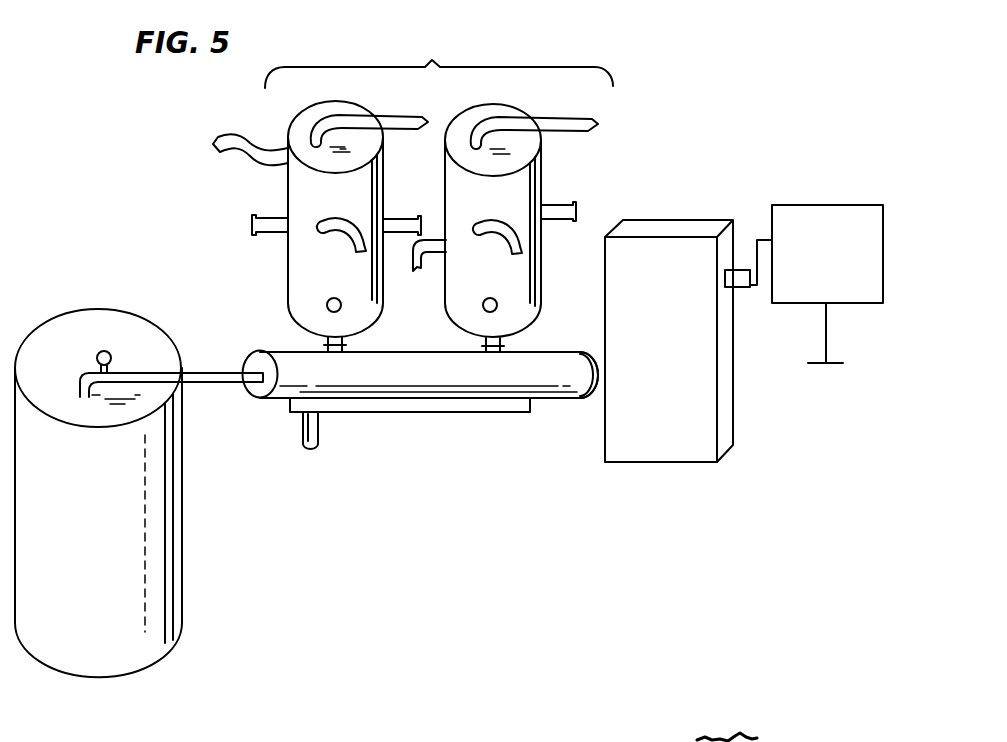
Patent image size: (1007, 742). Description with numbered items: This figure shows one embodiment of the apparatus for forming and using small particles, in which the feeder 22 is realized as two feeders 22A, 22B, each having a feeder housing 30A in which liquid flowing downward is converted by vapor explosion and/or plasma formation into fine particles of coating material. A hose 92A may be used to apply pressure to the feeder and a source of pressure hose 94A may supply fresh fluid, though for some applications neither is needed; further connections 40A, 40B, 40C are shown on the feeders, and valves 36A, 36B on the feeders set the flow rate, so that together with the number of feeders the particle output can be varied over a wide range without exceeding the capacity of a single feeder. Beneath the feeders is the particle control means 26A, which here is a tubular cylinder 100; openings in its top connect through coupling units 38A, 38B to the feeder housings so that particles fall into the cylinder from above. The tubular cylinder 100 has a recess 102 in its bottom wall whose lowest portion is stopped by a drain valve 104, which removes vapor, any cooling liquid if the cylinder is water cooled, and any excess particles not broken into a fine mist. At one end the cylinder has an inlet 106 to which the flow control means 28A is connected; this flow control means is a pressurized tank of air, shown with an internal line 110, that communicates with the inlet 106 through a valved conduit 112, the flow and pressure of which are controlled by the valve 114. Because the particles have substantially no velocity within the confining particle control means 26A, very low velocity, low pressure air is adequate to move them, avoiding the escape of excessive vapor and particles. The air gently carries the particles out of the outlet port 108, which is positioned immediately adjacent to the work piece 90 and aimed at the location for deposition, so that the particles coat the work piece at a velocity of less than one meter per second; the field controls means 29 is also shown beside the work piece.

The feeder 22 is at (439, 63).
The feeder 22A is at (291, 185).
The feeder 22B is at (541, 169).
The particle control means 26A is at (468, 413).
The flow control means 28A is at (188, 600).
The field controls means 29 is at (828, 205).
The feeder housing 30A is at (290, 253).
The valve 36A is at (342, 278).
The valve 36B is at (497, 278).
The coupling unit 38A is at (344, 346).
The coupling unit 38B is at (502, 346).
The inlet pipe 40A is at (269, 222).
The internal tube 40B is at (357, 230).
The outlet pipe 40C is at (407, 224).
The work piece 90 is at (670, 450).
The hose 92A is at (404, 88).
The source of pressure hose 94A is at (228, 139).
The tubular cylinder 100 is at (561, 386).
The recess 102 is at (434, 407).
The drain valve 104 is at (316, 431).
The inlet 106 is at (257, 390).
The outlet port 108 is at (597, 367).
The tank liquid line 110 is at (157, 538).
The valved conduit 112 is at (222, 378).
The valve 114 is at (101, 352).